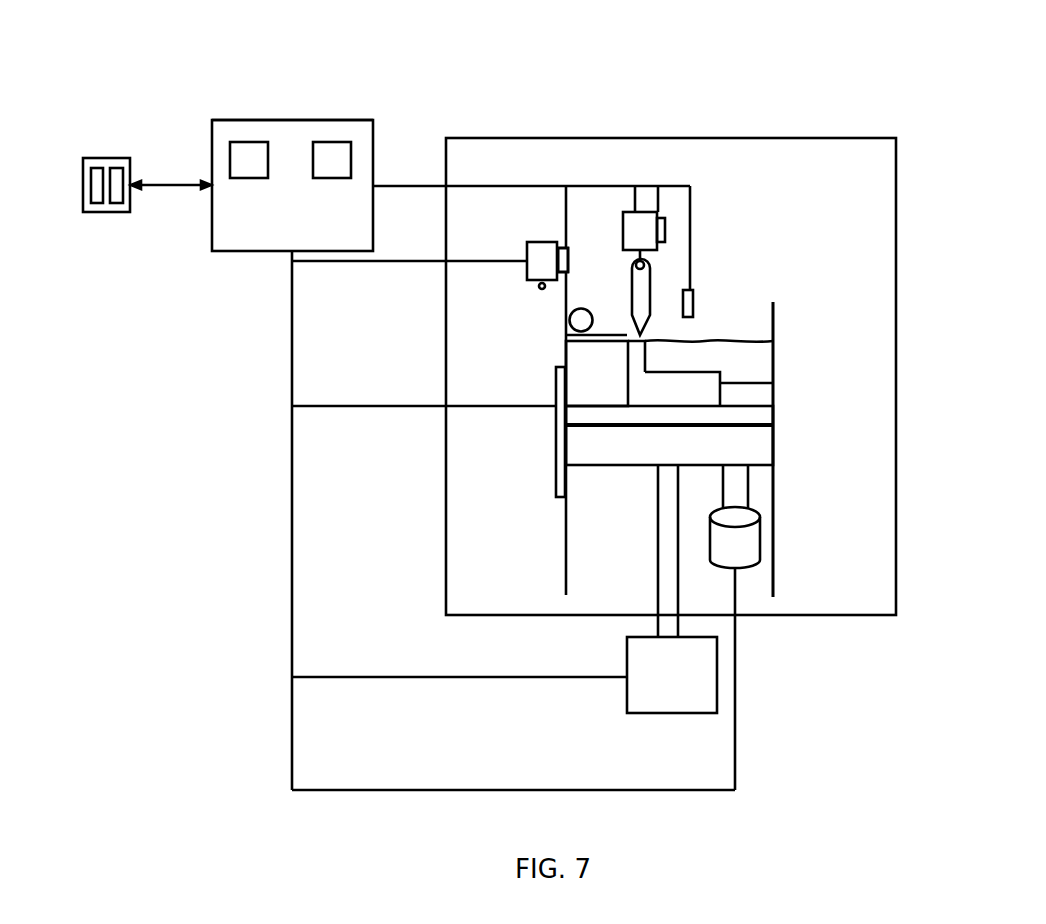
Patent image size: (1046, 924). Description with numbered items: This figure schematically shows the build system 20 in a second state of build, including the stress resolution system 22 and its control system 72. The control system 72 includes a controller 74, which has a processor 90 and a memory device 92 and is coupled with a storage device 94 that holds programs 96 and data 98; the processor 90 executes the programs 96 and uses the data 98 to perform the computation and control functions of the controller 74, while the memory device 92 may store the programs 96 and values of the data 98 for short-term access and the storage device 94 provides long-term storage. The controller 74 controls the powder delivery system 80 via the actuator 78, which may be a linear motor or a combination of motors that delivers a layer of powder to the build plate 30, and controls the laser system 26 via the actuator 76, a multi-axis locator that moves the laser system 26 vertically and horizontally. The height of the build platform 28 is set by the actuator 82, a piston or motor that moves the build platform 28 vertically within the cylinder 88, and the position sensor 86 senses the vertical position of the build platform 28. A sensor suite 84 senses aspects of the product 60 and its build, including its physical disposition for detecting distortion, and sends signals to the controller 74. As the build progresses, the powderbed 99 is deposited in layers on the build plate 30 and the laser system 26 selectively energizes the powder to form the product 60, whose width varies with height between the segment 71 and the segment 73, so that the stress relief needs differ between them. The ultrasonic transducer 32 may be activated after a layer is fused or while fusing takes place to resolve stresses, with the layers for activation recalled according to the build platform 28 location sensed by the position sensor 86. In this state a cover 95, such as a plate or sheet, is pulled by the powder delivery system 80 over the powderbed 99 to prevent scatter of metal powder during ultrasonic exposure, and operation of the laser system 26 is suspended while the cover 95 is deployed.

The build system 20 is at (729, 112).
The stress resolution system 22 is at (812, 572).
The laser system 26 is at (632, 242).
The build platform 28 is at (772, 447).
The build plate 30 is at (763, 415).
The ultrasonic transducer 32 is at (763, 537).
The product 60 is at (642, 384).
The segment 71 is at (683, 396).
The segment 73 is at (643, 349).
The control system 72 is at (323, 102).
The controller 74 is at (260, 120).
The actuator 76 is at (667, 230).
The actuator 78 is at (570, 261).
The powder delivery system 80 is at (530, 280).
The actuator 82 is at (672, 675).
The sensor suite 84 is at (695, 307).
The position sensor 86 is at (550, 427).
The cylinder 88 is at (567, 515).
The processor 90 is at (249, 178).
The memory device 92 is at (333, 178).
The storage device 94 is at (107, 158).
The cover 95 is at (600, 333).
The programs 96 is at (97, 211).
The data 98 is at (116, 211).
The powderbed 99 is at (763, 357).